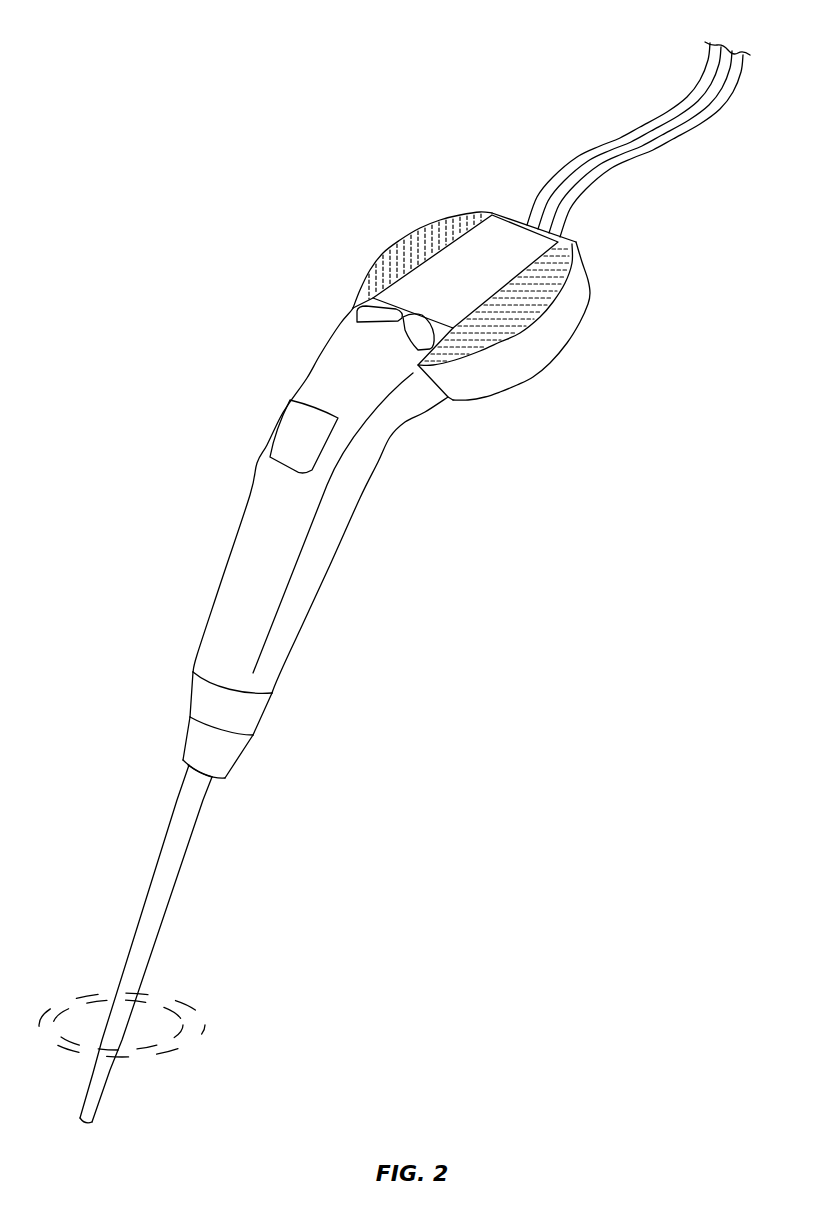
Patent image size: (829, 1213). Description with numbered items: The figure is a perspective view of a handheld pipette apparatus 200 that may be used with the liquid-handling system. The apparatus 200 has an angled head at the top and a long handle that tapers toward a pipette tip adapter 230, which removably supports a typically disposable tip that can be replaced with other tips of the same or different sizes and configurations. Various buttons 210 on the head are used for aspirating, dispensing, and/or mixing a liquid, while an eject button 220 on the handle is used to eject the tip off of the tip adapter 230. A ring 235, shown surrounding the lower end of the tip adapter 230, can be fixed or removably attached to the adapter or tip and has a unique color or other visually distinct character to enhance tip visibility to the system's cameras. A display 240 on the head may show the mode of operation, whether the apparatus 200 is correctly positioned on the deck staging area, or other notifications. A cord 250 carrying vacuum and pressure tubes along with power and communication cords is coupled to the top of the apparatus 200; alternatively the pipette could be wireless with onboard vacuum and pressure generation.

The handheld pipette apparatus 200 is at (290, 126).
The buttons 210 is at (357, 309).
The eject button 220 is at (283, 408).
The pipette tip adapter 230 is at (167, 825).
The ring 235 is at (204, 1010).
The display 240 is at (492, 213).
The cord 250 is at (644, 128).